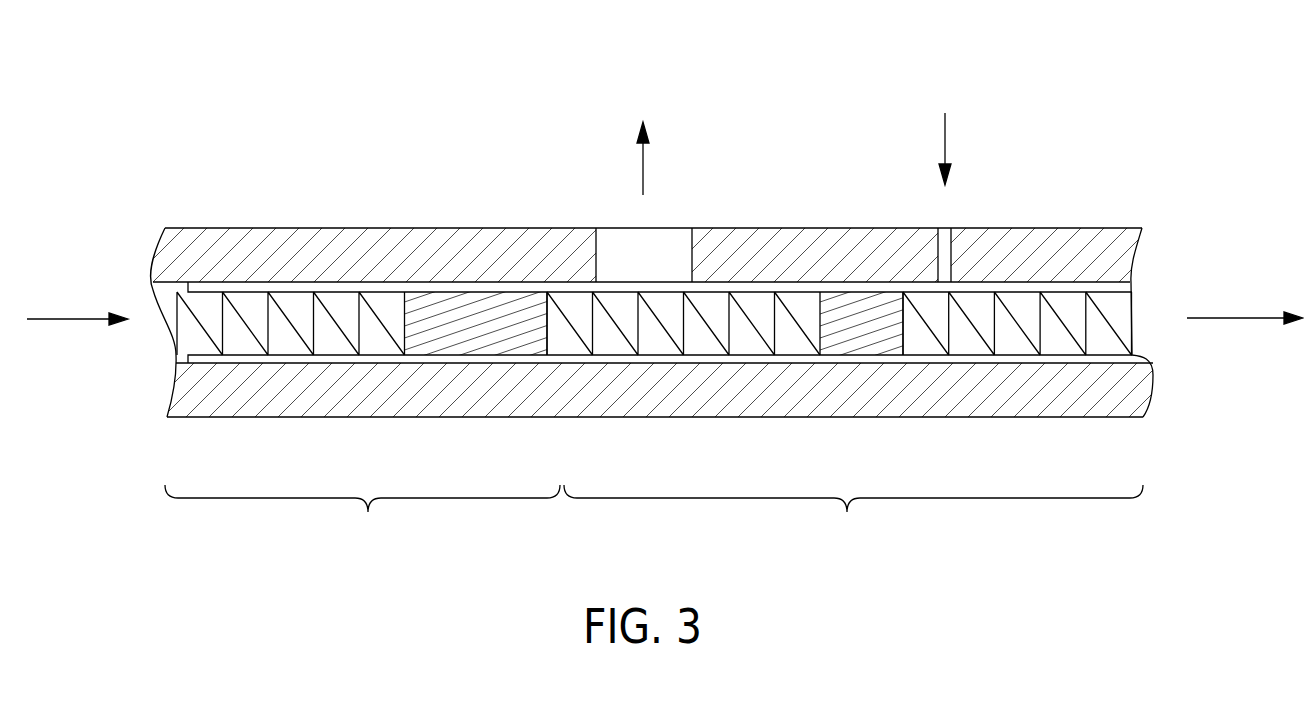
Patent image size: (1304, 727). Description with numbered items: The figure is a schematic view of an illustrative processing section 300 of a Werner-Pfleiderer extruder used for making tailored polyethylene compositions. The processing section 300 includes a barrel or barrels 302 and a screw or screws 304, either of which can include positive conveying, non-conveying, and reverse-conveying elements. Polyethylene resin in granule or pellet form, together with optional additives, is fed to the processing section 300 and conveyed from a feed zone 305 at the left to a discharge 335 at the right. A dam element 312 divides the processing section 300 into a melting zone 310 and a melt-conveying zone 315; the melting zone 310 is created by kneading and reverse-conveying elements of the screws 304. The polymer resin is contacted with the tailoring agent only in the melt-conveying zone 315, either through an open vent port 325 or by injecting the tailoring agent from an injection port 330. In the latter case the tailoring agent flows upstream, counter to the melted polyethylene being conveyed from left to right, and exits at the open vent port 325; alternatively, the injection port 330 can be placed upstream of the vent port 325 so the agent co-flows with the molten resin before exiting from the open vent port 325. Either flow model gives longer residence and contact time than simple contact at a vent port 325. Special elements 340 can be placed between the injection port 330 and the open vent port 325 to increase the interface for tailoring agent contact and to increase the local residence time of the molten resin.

The processing section 300 is at (1150, 98).
The barrel 302 is at (195, 400).
The screw 304 is at (287, 340).
The feed zone 305 is at (155, 336).
The melting zone 310 is at (362, 520).
The dam element 312 is at (470, 340).
The melt-conveying zone 315 is at (853, 520).
The open vent port 325 is at (680, 228).
The injection port 330 is at (947, 228).
The discharge 335 is at (1150, 335).
The special elements 340 is at (868, 340).